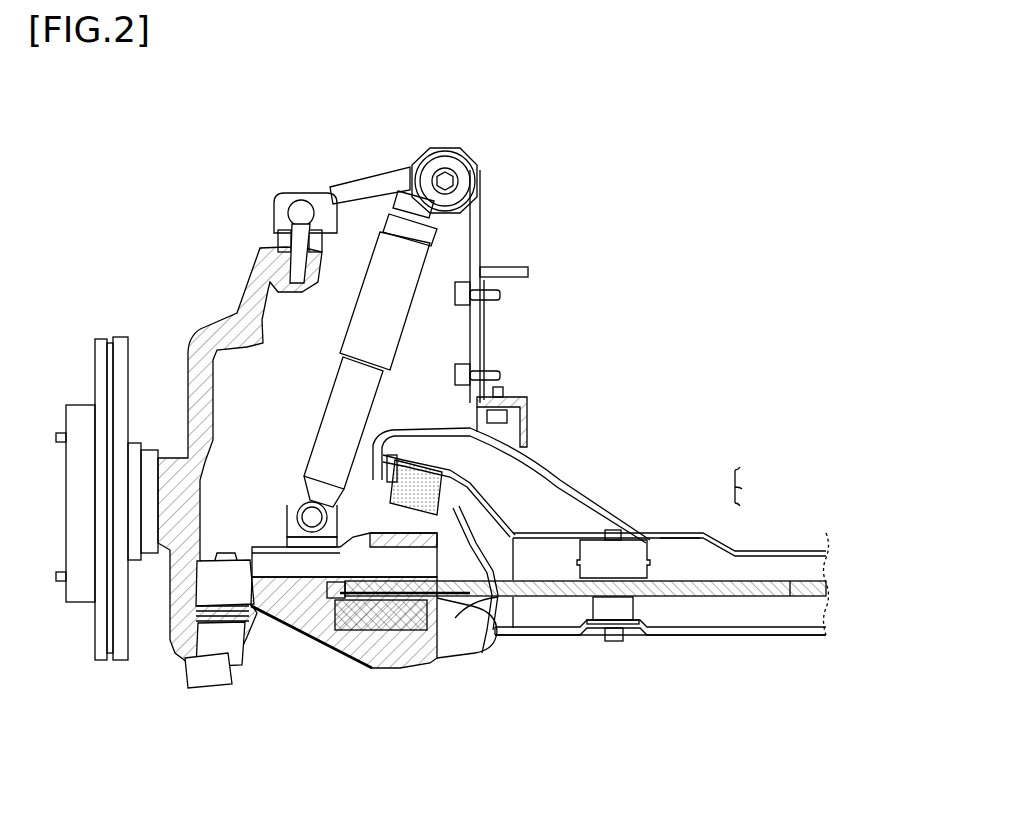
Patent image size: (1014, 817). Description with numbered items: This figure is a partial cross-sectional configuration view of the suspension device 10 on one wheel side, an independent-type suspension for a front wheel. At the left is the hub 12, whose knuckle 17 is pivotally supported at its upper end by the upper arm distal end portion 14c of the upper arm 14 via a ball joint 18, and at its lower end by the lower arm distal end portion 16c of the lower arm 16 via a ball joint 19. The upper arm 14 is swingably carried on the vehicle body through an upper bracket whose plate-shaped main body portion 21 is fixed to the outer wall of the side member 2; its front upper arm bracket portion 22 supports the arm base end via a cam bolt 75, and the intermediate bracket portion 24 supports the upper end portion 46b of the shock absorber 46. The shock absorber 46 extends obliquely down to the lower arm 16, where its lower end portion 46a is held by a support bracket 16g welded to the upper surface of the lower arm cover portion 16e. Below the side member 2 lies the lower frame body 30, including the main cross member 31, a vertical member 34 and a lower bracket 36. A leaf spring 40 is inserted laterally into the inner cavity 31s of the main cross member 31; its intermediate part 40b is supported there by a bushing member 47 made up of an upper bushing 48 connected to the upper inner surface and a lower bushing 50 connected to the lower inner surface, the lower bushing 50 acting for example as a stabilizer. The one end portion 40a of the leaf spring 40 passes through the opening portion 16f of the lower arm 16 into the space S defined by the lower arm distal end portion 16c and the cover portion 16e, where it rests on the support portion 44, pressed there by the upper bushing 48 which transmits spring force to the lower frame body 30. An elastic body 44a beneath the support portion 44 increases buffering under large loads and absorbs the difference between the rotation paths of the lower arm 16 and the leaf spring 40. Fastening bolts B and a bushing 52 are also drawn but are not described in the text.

The suspension device 10 is at (668, 162).
The hub 12 is at (118, 312).
The upper arm 14 is at (358, 178).
The upper arm distal end portion 14c is at (300, 193).
The lower arm 16 is at (413, 690).
The lower arm distal end portion 16c is at (280, 640).
The lower arm cover portion 16e is at (348, 536).
The opening portion 16f is at (457, 600).
The support bracket 16g is at (290, 522).
The knuckle 17 is at (214, 327).
The ball joint 18 is at (275, 205).
The ball joint 19 is at (222, 558).
The side member 2 is at (486, 333).
The main body portion 21 is at (484, 246).
The front upper arm bracket portion 22 is at (433, 150).
The intermediate bracket portion 24 is at (480, 218).
The lower frame body 30 is at (612, 675).
The main cross member 31 is at (720, 640).
The inner cavity 31s is at (722, 569).
The vertical member 34 is at (531, 432).
The lower bracket 36 is at (568, 484).
The leaf spring 40 is at (683, 612).
The one end portion 40a is at (338, 604).
The intermediate part 40b is at (784, 600).
The support portion 44 is at (386, 642).
The elastic body 44a is at (362, 642).
The shock absorber 46 is at (321, 369).
The lower end portion 46a is at (298, 492).
The upper end portion 46b is at (376, 226).
The bushing member 47 is at (750, 486).
The upper bushing 48 is at (622, 545).
The lower bushing 50 is at (622, 605).
The rubber bushing 52 is at (425, 494).
The cam bolt 75 is at (475, 172).
The fastening bolt B is at (502, 296).
The space S is at (394, 562).